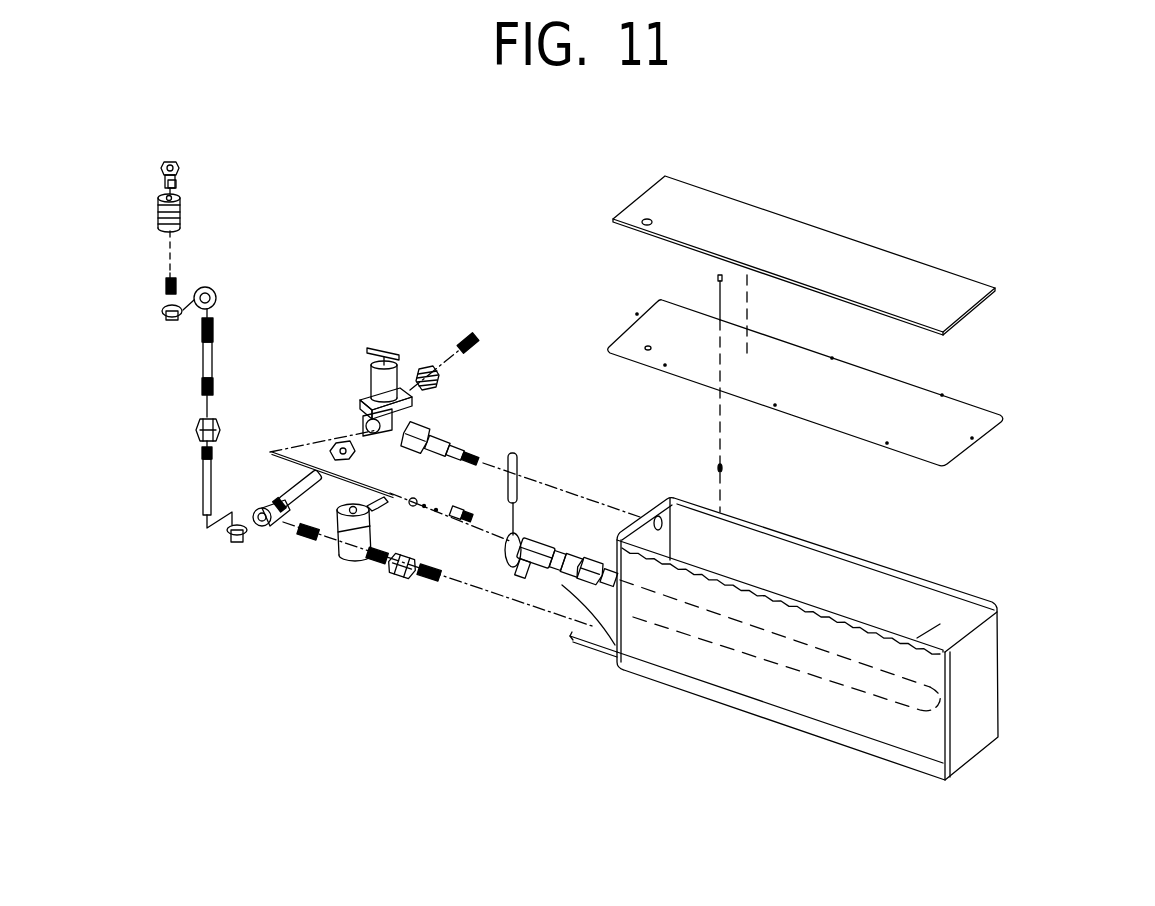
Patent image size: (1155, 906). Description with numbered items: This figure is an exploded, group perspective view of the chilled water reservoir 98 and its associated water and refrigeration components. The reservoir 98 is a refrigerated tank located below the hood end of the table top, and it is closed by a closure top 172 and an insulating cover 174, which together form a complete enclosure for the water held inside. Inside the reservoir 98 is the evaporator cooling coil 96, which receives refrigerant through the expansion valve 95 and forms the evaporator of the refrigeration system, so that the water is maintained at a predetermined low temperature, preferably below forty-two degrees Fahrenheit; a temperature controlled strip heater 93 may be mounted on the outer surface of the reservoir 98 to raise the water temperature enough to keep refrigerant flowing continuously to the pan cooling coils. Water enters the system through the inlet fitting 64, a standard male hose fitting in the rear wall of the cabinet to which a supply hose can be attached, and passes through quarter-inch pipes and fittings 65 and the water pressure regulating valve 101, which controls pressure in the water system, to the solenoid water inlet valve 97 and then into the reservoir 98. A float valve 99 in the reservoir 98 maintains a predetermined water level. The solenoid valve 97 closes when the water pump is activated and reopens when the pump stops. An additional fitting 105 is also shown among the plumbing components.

The inlet fitting 64 is at (163, 187).
The pipes and fittings 65 is at (190, 365).
The water pressure regulating valve 101 is at (392, 380).
The fitting 105 is at (367, 467).
The float valve 99 is at (440, 440).
The solenoid water inlet valve 97 is at (345, 543).
The expansion valve 95 is at (522, 567).
The temperature controlled strip heater 93 is at (760, 700).
The evaporator cooling coil 96 is at (875, 700).
The chilled water reservoir 98 is at (977, 722).
The insulating cover 174 is at (932, 287).
The closure top 172 is at (955, 418).